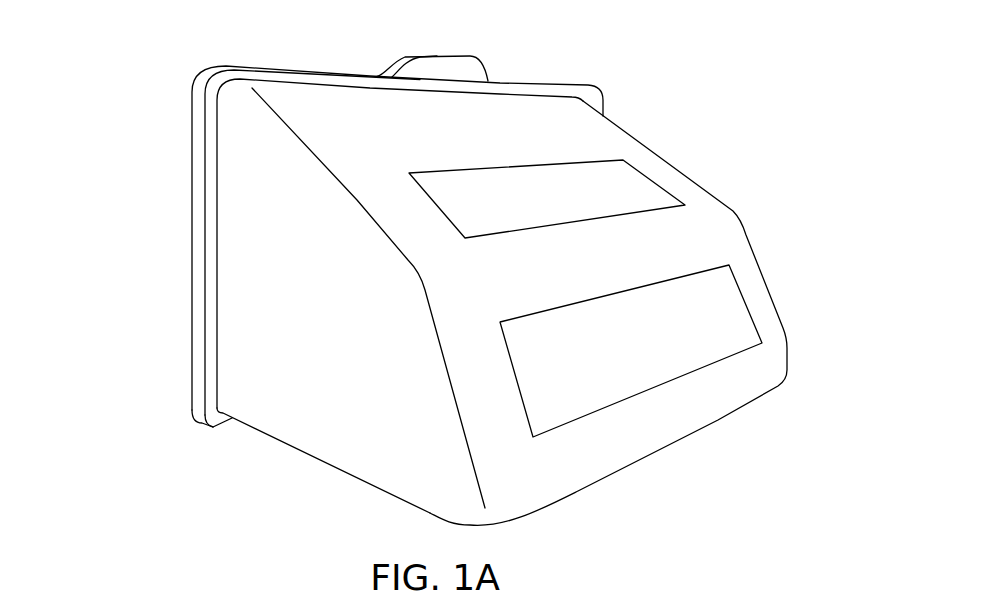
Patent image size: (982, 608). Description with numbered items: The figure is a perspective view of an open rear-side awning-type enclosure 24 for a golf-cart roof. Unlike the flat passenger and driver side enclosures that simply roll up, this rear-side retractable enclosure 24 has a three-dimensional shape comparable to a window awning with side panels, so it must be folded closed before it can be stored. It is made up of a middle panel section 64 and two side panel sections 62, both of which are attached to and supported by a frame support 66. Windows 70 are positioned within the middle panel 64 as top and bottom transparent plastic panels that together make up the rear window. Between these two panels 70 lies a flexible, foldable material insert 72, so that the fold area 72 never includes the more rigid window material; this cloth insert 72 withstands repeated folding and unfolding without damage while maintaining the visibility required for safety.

The rear-side retractable awning-like enclosure 24 is at (115, 294).
The side panel section 62 is at (265, 200).
The middle panel section 64 is at (535, 123).
The frame support 66 is at (342, 80).
The windows 70 is at (630, 188).
The flexible, foldable material insert 72 is at (722, 219).